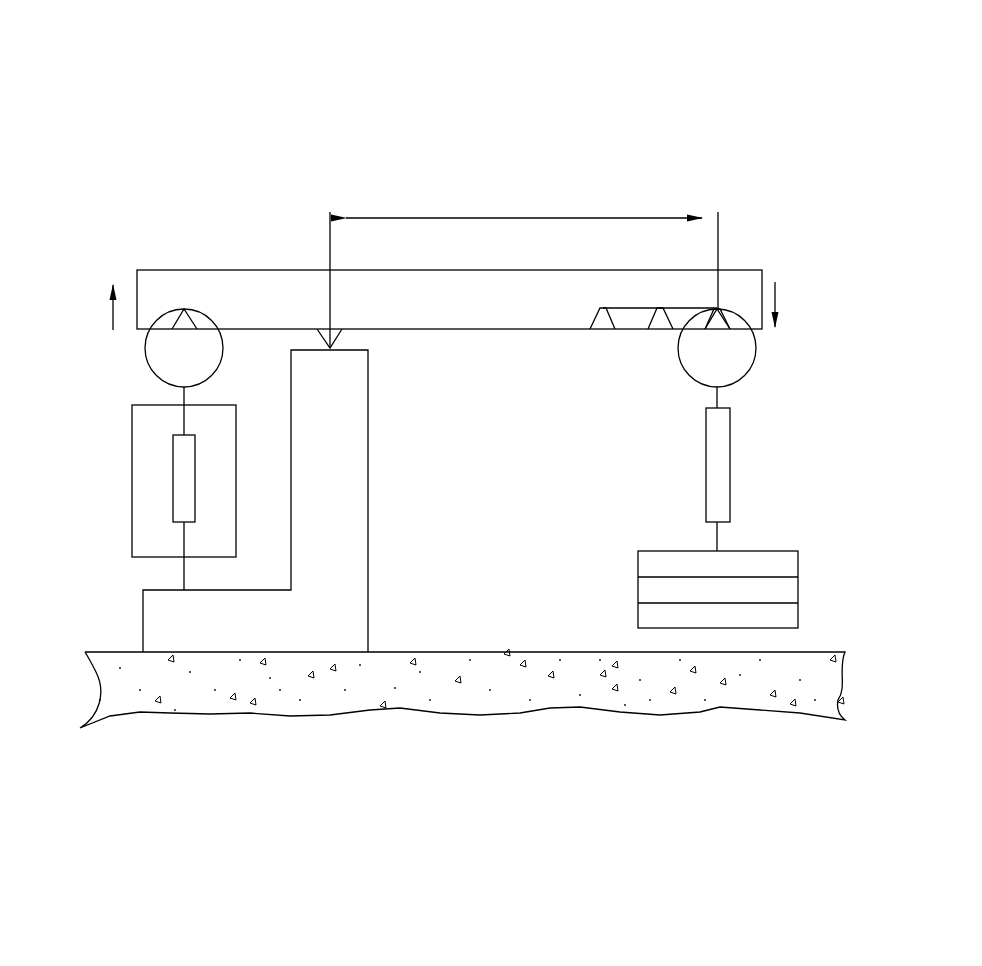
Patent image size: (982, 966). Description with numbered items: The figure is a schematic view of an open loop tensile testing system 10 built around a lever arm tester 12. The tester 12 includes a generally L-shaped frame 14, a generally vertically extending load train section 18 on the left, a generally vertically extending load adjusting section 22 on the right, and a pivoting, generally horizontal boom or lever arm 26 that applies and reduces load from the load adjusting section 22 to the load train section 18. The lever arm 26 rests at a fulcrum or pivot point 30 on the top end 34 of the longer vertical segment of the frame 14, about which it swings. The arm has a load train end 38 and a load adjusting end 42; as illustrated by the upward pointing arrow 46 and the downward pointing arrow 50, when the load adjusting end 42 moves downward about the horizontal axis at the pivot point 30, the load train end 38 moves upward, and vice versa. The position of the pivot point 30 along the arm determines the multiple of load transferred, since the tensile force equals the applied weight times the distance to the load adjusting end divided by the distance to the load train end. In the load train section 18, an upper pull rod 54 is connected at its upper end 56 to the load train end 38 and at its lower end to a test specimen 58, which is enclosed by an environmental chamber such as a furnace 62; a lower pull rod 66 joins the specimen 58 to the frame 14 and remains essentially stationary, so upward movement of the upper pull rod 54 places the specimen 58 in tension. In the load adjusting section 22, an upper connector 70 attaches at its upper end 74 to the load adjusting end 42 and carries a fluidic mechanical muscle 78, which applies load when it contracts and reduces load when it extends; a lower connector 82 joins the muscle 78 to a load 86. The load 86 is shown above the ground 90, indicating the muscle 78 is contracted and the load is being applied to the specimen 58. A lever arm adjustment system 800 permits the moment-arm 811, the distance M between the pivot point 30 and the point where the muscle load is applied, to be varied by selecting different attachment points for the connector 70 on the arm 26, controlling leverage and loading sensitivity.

The tensile testing system 10 is at (452, 95).
The lever arm tester 12 is at (363, 175).
The frame 14 is at (382, 500).
The load train section 18 is at (110, 422).
The load adjusting section 22 is at (738, 470).
The lever arm 26 is at (540, 270).
The pivot point 30 is at (345, 336).
The top end 34 is at (303, 346).
The load train end 38 is at (188, 258).
The load adjusting end 42 is at (735, 250).
The upward pointing arrow 46 is at (113, 318).
The downward pointing arrow 50 is at (775, 292).
The upper pull rod 54 is at (186, 398).
The upper end connection 56 is at (145, 358).
The test specimen 58 is at (185, 498).
The furnace 62 is at (127, 513).
The lower pull rod 66 is at (183, 573).
The upper connector 70 is at (720, 398).
The upper connection 74 is at (679, 362).
The fluidic mechanical muscle 78 is at (706, 460).
The lower connector 82 is at (722, 543).
The load 86 is at (628, 587).
The ground 90 is at (522, 643).
The lever arm adjustment system 800 is at (626, 298).
The moment-arm 811 is at (517, 218).